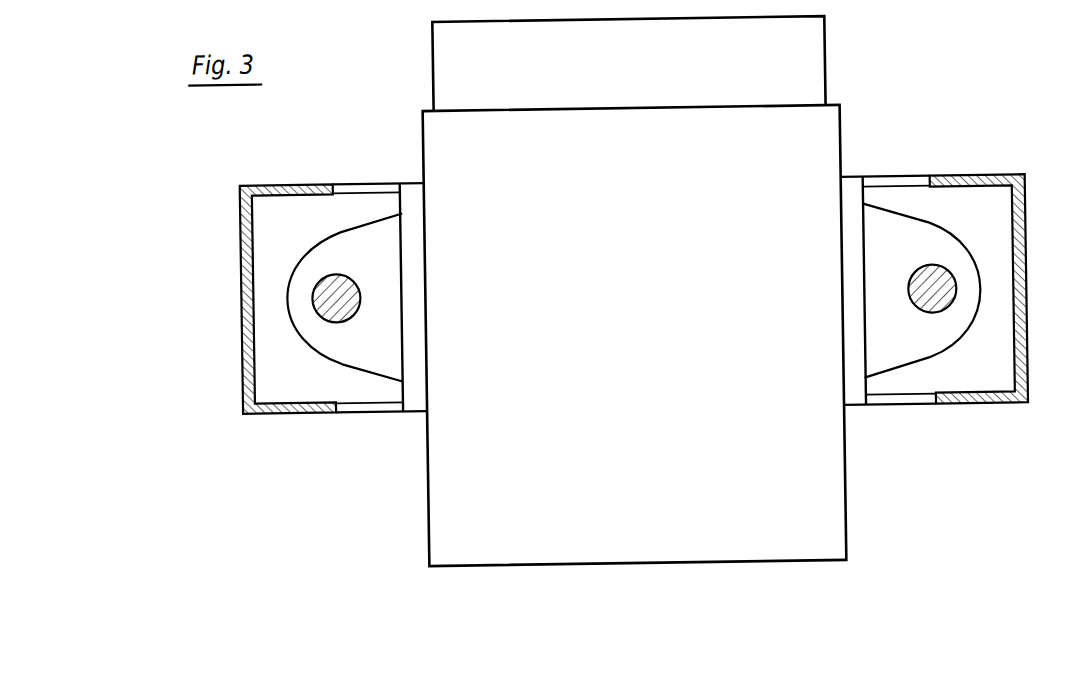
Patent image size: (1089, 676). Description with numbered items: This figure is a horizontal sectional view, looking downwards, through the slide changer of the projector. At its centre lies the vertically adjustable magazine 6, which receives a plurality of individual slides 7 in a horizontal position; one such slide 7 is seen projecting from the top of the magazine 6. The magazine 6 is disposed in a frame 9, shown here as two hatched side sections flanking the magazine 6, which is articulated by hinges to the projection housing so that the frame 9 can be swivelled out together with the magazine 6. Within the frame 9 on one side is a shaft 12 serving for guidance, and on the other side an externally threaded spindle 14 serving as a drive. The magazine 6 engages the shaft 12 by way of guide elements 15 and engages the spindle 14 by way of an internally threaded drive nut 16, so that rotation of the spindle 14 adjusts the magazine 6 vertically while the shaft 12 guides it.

The magazine 6 is at (446, 463).
The individual slide 7 is at (809, 70).
The frame 9 is at (241, 337).
The shaft 12 is at (326, 293).
The spindle 14 is at (941, 292).
The guide element 15 is at (326, 248).
The drive nut 16 is at (955, 323).